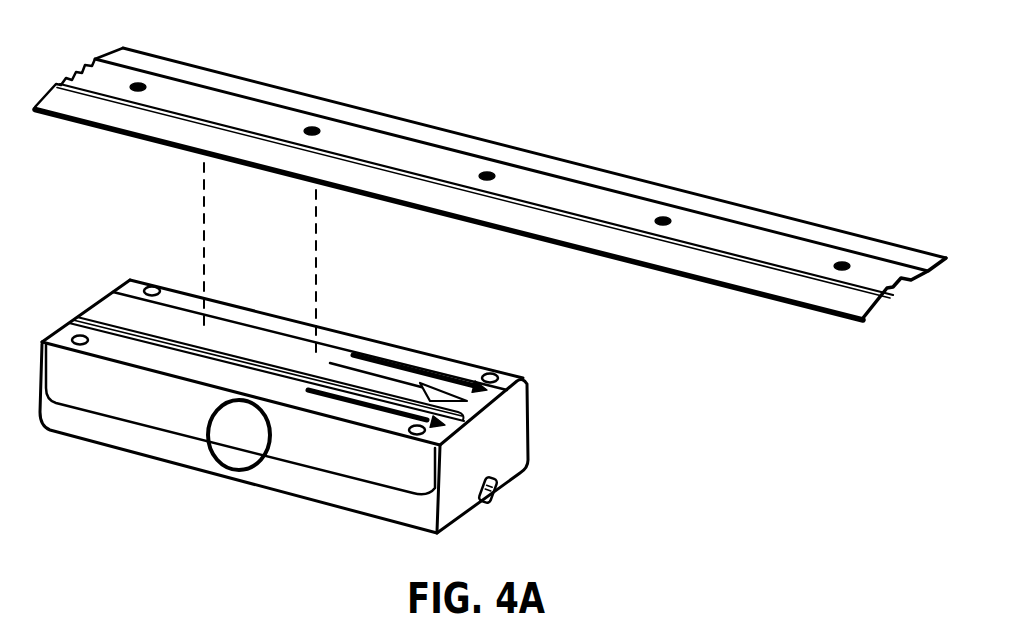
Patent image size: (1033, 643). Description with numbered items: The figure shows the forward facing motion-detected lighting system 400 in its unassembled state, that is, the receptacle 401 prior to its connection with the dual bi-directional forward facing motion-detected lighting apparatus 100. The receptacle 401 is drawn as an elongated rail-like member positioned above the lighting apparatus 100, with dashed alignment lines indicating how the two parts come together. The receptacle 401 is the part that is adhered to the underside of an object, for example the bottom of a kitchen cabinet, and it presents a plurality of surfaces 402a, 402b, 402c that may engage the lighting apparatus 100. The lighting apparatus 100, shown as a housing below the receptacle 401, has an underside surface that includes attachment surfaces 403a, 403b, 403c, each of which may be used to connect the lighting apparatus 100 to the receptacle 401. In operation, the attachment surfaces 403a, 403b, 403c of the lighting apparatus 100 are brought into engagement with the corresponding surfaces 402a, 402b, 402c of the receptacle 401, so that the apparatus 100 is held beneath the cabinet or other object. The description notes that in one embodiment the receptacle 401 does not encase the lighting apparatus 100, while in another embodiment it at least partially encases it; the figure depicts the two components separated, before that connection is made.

The dual bi-directional forward facing motion-detected lighting apparatus 100 is at (279, 379).
The forward facing motion-detected lighting system 400 is at (490, 160).
The receptacle 401 is at (490, 160).
The surface of the receptacle 402a is at (157, 123).
The surface of the receptacle 402b is at (120, 72).
The surface of the receptacle 402c is at (260, 92).
The attachment surface 403a is at (164, 357).
The attachment surface 403b is at (107, 313).
The attachment surface 403c is at (180, 297).